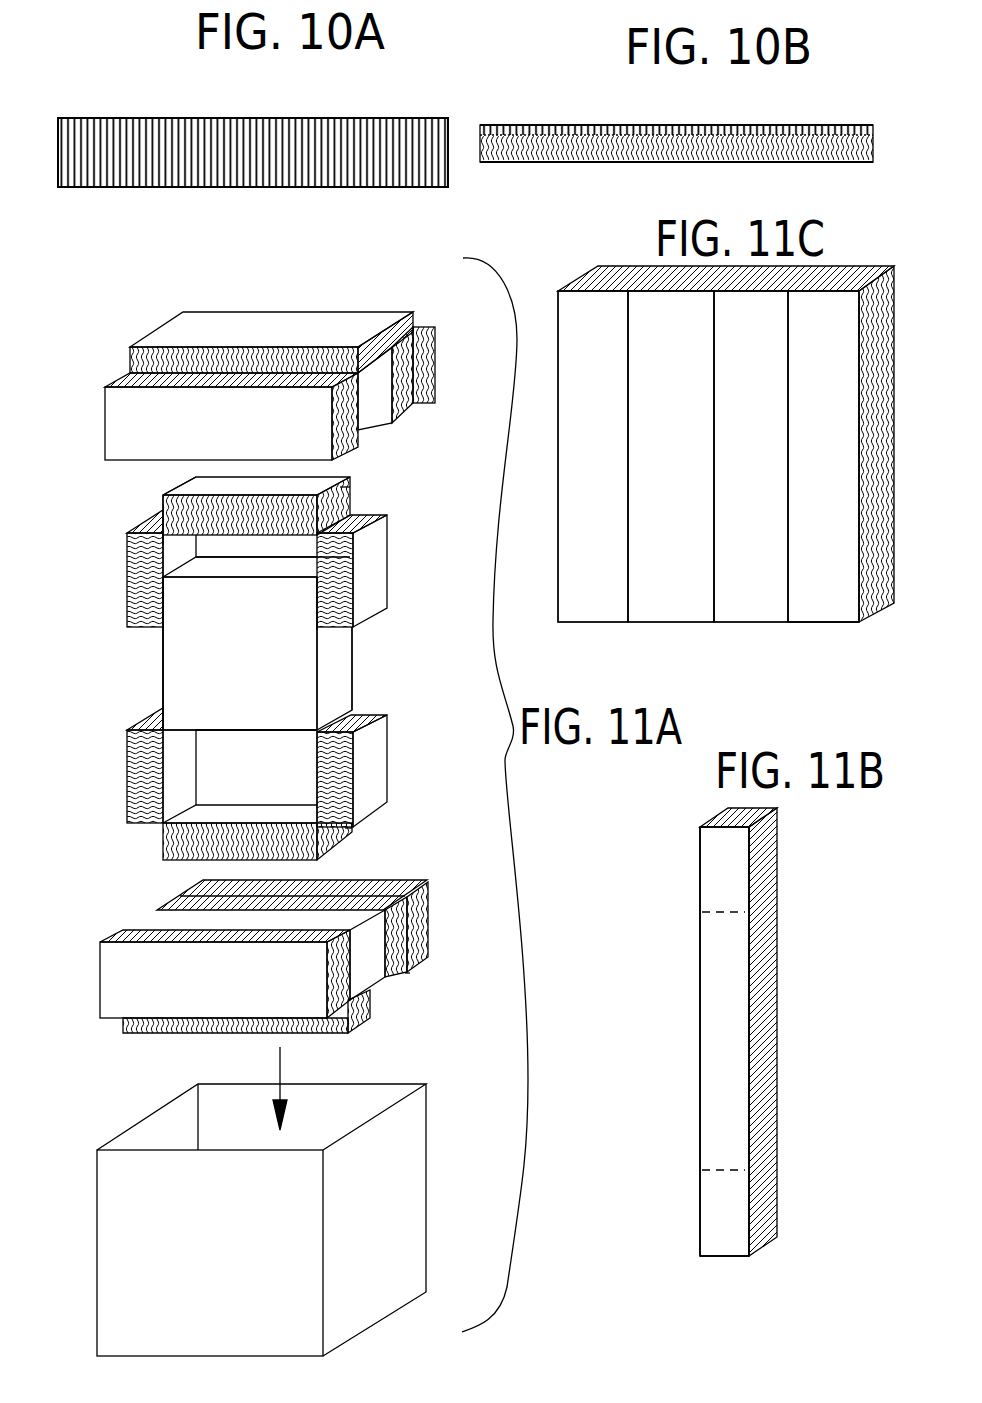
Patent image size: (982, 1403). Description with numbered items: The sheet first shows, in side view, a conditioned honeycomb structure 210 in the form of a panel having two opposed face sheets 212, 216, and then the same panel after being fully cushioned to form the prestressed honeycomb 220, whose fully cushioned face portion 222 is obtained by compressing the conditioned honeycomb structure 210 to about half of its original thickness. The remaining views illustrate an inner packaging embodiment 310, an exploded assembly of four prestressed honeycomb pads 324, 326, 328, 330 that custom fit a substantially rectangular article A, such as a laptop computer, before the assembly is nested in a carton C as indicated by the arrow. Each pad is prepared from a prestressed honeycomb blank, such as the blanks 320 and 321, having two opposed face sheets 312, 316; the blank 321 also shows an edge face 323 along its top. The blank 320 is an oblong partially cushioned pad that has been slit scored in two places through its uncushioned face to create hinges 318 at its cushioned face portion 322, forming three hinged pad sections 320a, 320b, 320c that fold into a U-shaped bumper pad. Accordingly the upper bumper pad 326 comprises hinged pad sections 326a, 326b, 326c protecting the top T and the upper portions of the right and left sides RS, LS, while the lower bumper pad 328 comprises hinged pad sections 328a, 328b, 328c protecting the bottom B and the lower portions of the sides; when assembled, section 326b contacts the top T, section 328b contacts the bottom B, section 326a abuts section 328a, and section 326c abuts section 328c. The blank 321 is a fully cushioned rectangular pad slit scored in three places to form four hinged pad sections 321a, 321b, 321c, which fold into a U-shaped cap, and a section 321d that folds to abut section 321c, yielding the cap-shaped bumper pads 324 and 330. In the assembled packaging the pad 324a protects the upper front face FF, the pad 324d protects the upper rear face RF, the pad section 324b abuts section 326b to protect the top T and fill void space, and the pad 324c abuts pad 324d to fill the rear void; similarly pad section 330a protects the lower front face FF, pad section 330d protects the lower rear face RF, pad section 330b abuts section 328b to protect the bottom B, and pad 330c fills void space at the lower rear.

In FIG. 10A, the conditioned honeycomb structure 210 is at (114, 108).
In FIG. 10A, the face sheet 212 is at (372, 188).
In FIG. 10B, the face sheet 212 is at (800, 163).
In FIG. 10A, the face sheet 216 is at (396, 118).
In FIG. 10B, the face sheet 216 is at (640, 126).
In FIG. 10B, the prestressed honeycomb 220 is at (534, 114).
In FIG. 10B, the fully cushioned face portion 222 is at (876, 142).
In FIG. 11A, the inner packaging embodiment 310 is at (82, 378).
In FIG. 11C, the face sheet 312 is at (895, 550).
In FIG. 11B, the face sheet 312 is at (705, 1103).
In FIG. 11A, the face sheet 312 is at (243, 813).
In FIG. 11C, the face sheet 316 is at (828, 605).
In FIG. 11B, the face sheet 316 is at (779, 1070).
In FIG. 11A, the face sheet 316 is at (167, 493).
In FIG. 11C, the hinges 318 is at (630, 474).
In FIG. 11B, the hinges 318 is at (705, 912).
In FIG. 11A, the hinges 318 is at (347, 487).
In FIG. 11B, the prestressed honeycomb blank 320 is at (729, 1068).
In FIG. 11B, the hinged pad section 320a is at (722, 1258).
In FIG. 11B, the hinged pad section 320b is at (698, 1055).
In FIG. 11B, the hinged pad section 320c is at (700, 849).
In FIG. 11C, the prestressed honeycomb blank 321 is at (714, 464).
In FIG. 11C, the pad section 321a is at (593, 603).
In FIG. 11C, the pad section 321b is at (665, 602).
In FIG. 11C, the pad section 321c is at (757, 602).
In FIG. 11C, the pad section 321d is at (849, 590).
In FIG. 11B, the partially cushioned face portion 322 is at (757, 1005).
In FIG. 11A, the partially cushioned face portion 322 is at (162, 540).
In FIG. 11C, the top edge face 323 is at (894, 328).
In FIG. 11A, the cap-shaped bumper pad 324 is at (485, 375).
In FIG. 11A, the pad section 324a is at (120, 432).
In FIG. 11A, the pad section 324b is at (203, 316).
In FIG. 11A, the pad section 324c is at (433, 350).
In FIG. 11A, the pad section 324d is at (377, 407).
In FIG. 11A, the U-shaped bumper pad 326 is at (400, 565).
In FIG. 11A, the hinged pad section 326a is at (388, 598).
In FIG. 11A, the hinged pad section 326b is at (323, 481).
In FIG. 11A, the hinged pad section 326c is at (127, 587).
In FIG. 11A, the U-shaped bumper pad 328 is at (108, 813).
In FIG. 11A, the hinged pad section 328a is at (377, 757).
In FIG. 11A, the hinged pad section 328b is at (177, 860).
In FIG. 11A, the hinged pad section 328c is at (127, 760).
In FIG. 11A, the cap-shaped bumper pad 330 is at (447, 950).
In FIG. 11A, the pad section 330a is at (113, 989).
In FIG. 11A, the pad section 330b is at (398, 1008).
In FIG. 11A, the pad section 330c is at (428, 912).
In FIG. 11A, the pad section 330d is at (380, 922).
In FIG. 11A, the top T is at (233, 570).
In FIG. 11A, the article A is at (256, 652).
In FIG. 11A, the bottom B is at (217, 732).
In FIG. 11A, the carton C is at (408, 1202).
In FIG. 11A, the left side LS is at (162, 667).
In FIG. 11A, the right side RS is at (347, 662).
In FIG. 11A, the rear face RF is at (347, 677).
In FIG. 11A, the front face FF is at (267, 712).